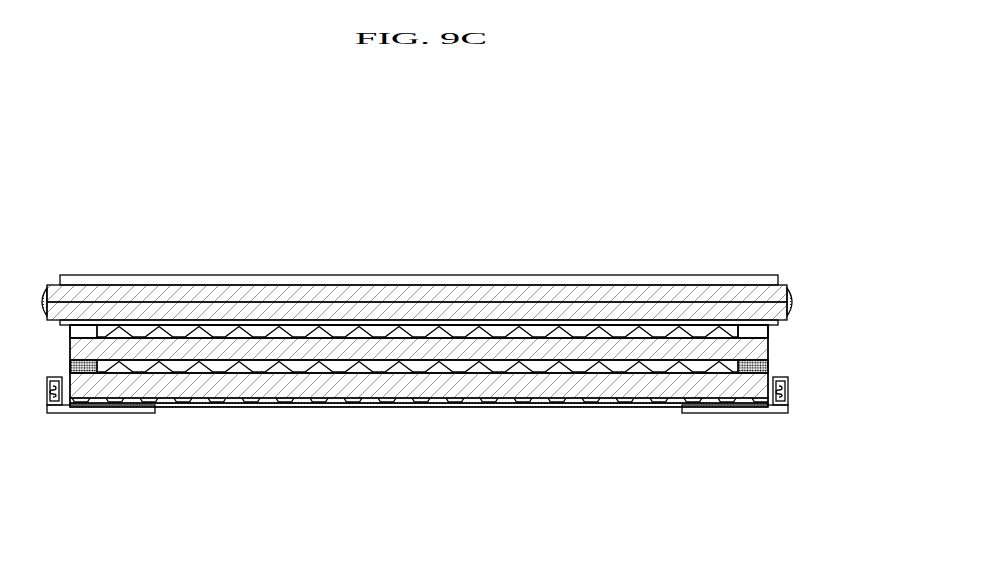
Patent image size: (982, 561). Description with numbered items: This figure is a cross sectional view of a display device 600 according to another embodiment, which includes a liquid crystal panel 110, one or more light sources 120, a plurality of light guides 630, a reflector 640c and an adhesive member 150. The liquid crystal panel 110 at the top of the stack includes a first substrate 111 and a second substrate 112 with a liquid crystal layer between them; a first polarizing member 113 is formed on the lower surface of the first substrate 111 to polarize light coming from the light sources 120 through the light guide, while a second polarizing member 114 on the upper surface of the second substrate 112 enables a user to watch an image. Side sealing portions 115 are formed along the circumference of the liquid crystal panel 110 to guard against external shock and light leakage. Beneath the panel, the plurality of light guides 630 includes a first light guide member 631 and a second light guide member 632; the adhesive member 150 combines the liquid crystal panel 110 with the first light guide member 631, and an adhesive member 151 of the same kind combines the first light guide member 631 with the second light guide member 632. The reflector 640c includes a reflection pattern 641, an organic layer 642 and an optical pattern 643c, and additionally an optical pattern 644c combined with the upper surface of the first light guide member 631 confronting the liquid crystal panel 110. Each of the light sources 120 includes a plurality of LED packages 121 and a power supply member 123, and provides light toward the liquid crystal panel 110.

The display device 600 is at (142, 164).
The liquid crystal panel 110 is at (378, 203).
The first substrate 111 is at (378, 312).
The second substrate 112 is at (430, 295).
The first polarizing member 113 is at (483, 319).
The second polarizing member 114 is at (533, 278).
The side sealing portion 115 is at (795, 290).
The adhesive member 150 is at (740, 332).
The adhesive member 151 is at (768, 363).
The light guides 630 is at (325, 466).
The first light guide member 631 is at (328, 351).
The second light guide member 632 is at (383, 384).
The reflector 640c is at (670, 466).
The reflection pattern 641 is at (493, 402).
The organic layer 642 is at (568, 406).
The optical pattern 643c is at (598, 374).
The optical pattern 644c is at (632, 339).
The light source 120 is at (795, 490).
The LED packages 121 is at (778, 409).
The power supply member 123 is at (728, 411).